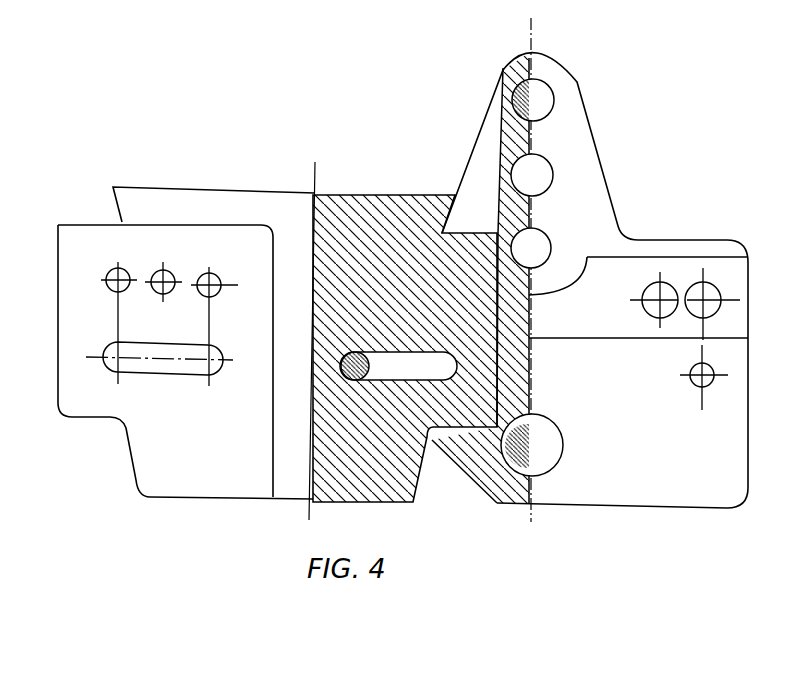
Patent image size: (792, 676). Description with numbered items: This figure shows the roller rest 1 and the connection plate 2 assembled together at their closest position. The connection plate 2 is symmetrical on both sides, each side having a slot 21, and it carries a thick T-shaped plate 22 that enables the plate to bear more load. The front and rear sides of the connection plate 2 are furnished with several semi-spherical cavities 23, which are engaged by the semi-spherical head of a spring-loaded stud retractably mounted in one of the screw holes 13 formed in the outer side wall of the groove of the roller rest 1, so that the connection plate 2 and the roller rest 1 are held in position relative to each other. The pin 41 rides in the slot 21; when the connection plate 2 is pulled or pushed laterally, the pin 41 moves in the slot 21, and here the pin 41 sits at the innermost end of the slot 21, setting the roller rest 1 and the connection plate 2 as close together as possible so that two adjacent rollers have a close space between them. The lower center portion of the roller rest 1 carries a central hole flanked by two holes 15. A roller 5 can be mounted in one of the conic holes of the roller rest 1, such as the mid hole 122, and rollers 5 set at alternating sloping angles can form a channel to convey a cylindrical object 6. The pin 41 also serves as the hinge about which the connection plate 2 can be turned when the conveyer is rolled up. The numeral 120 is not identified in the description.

The roller rest 1 is at (728, 506).
The connection plate 2 is at (138, 489).
The roller 5 is at (535, 82).
The cylindrical object 6 is at (522, 478).
The screw holes 13 is at (717, 290).
The holes 15 is at (712, 368).
The slot 21 is at (382, 378).
The T-shaped plate 22 is at (187, 192).
The semi-spherical cavities 23 is at (126, 270).
The pin 41 is at (342, 366).
The hole 120 is at (551, 240).
The mid hole 122 is at (552, 168).